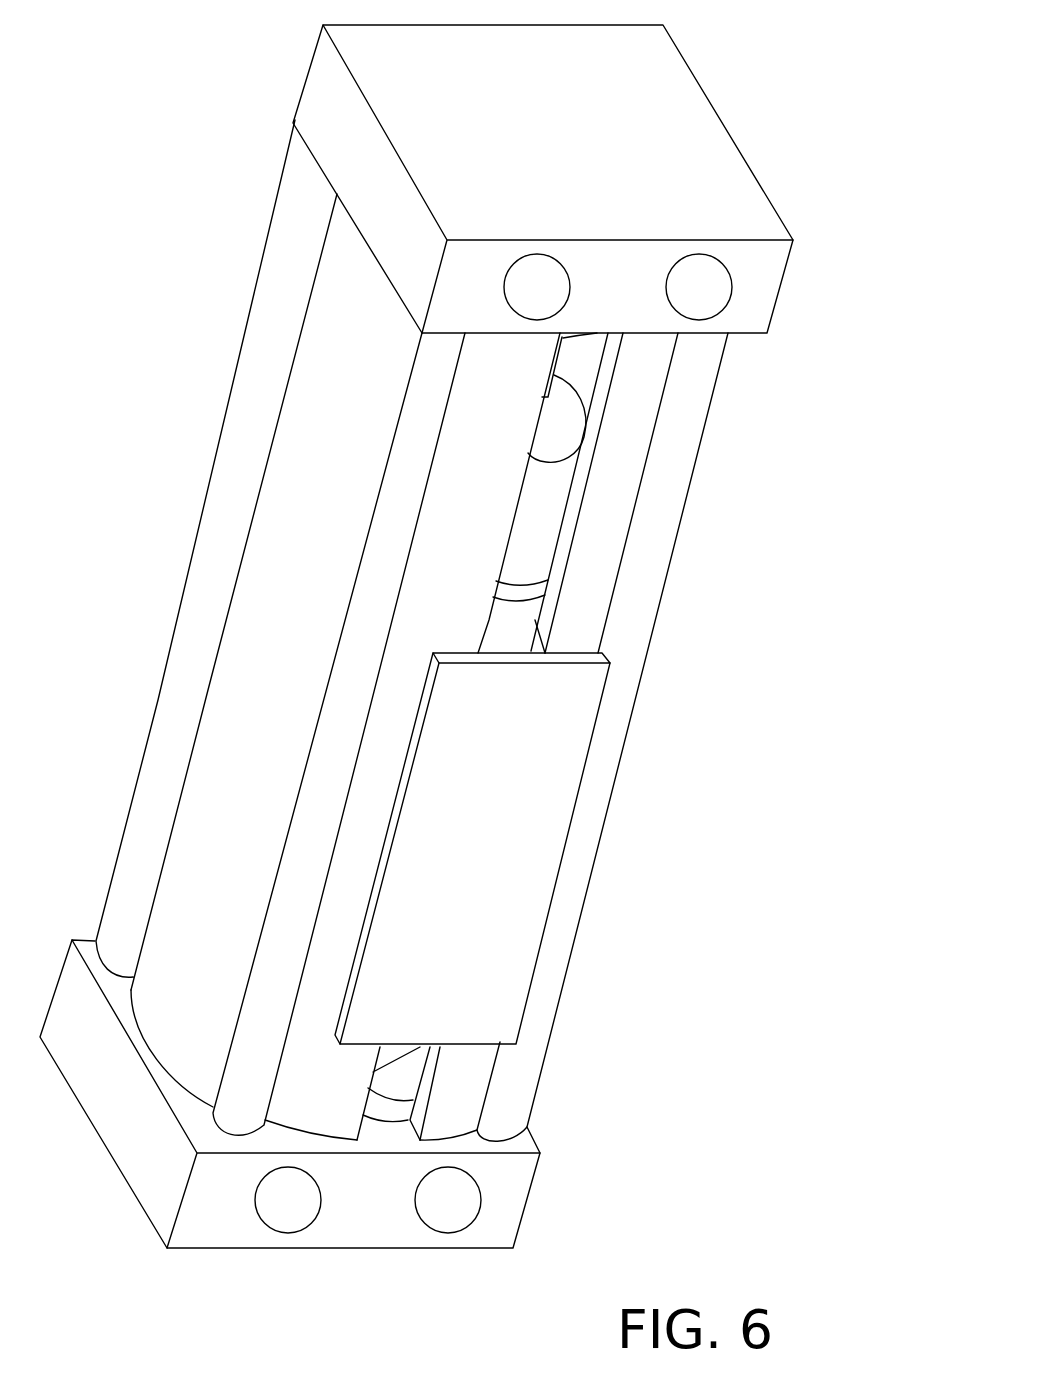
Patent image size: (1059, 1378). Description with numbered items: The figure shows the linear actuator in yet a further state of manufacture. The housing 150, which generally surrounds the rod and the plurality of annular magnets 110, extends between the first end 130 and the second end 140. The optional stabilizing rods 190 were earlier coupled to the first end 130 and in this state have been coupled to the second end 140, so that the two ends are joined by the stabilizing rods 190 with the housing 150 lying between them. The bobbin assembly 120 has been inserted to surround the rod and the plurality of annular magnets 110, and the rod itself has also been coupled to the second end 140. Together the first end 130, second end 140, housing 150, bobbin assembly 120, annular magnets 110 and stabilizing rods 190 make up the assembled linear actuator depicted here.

The plurality of annular magnets 110 is at (532, 565).
The bobbin assembly 120 is at (552, 828).
The first end 130 is at (782, 288).
The second end 140 is at (527, 1205).
The housing 150 is at (284, 557).
The stabilizing rods 190 is at (260, 353).